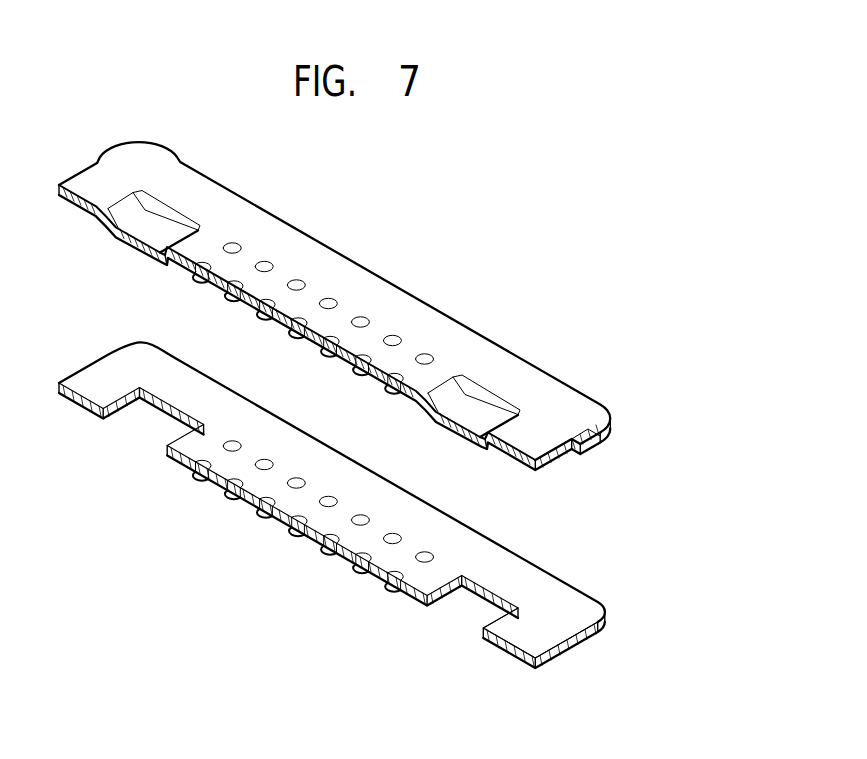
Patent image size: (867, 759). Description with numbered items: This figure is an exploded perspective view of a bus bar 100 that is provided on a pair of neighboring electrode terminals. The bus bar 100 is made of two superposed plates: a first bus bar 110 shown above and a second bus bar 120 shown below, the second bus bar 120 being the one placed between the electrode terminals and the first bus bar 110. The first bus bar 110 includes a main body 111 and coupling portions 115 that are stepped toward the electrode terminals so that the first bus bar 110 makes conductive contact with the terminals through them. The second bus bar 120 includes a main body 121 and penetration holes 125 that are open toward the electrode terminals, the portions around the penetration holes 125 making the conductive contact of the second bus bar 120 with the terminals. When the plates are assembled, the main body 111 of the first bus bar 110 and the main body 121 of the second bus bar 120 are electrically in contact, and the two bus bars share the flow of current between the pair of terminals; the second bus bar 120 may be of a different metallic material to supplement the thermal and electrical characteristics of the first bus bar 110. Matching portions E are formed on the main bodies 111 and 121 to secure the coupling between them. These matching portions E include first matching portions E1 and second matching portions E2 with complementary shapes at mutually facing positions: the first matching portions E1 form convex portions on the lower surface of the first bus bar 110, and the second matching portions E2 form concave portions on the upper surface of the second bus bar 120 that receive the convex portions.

The bus bar 100 is at (725, 456).
The first bus bar 110 is at (614, 446).
The main body 111 is at (547, 385).
The coupling portions 115 is at (471, 407).
The second bus bar 120 is at (614, 590).
The main body 121 is at (409, 596).
The penetration holes 125 is at (471, 614).
The matching portions E is at (334, 278).
The first matching portions E1 is at (398, 335).
The second matching portions E2 is at (233, 496).